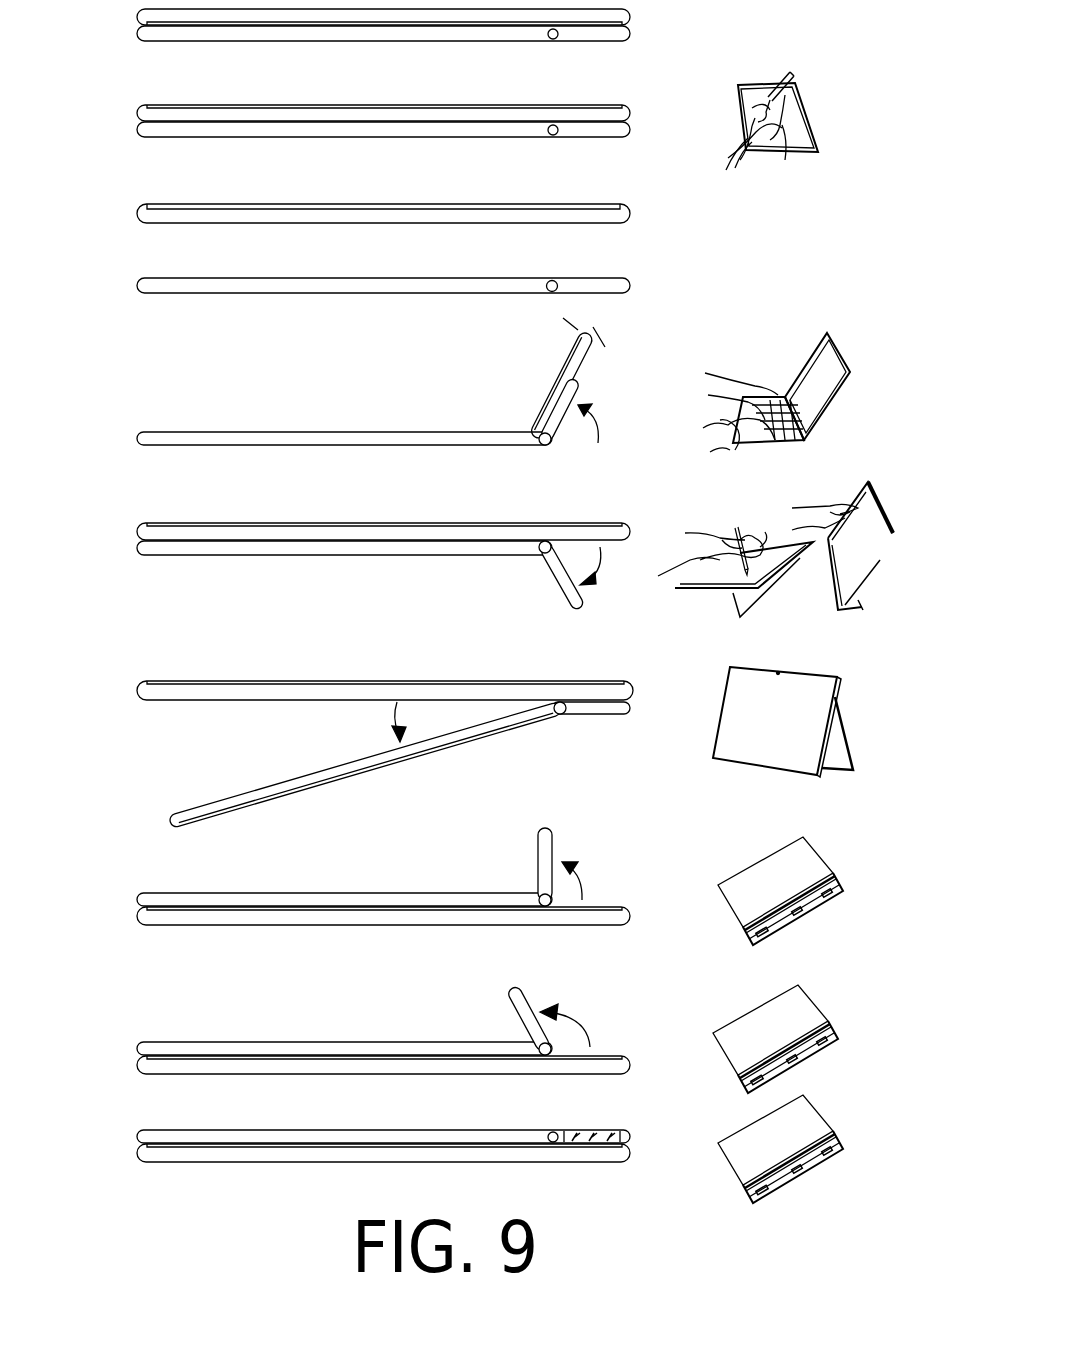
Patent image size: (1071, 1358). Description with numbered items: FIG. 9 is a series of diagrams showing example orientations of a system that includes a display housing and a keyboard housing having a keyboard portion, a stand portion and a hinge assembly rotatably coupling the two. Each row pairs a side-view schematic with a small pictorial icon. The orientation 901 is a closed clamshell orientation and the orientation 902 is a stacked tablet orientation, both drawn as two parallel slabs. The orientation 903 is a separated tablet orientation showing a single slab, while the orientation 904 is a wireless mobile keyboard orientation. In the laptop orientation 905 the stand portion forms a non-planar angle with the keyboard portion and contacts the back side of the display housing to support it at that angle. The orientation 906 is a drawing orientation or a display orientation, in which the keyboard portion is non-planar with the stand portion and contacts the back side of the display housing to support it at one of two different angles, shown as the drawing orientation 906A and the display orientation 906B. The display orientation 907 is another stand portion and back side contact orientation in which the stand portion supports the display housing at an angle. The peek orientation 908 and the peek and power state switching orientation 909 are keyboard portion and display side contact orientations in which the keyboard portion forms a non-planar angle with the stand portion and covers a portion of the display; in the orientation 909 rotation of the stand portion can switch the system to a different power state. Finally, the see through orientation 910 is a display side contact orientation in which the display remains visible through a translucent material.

The closed clamshell orientation 901 is at (330, 27).
The stacked tablet orientation 902 is at (424, 121).
The separated tablet orientation 903 is at (330, 202).
The wireless mobile keyboard orientation 904 is at (330, 276).
The laptop orientation 905 is at (440, 393).
The drawing or display orientation 906 is at (330, 554).
The drawing orientation 906A is at (727, 589).
The display orientation 906B is at (869, 546).
The display orientation 907 is at (441, 739).
The peek orientation 908 is at (436, 886).
The peek and power state switching orientation 909 is at (434, 1039).
The see through orientation 910 is at (436, 1149).